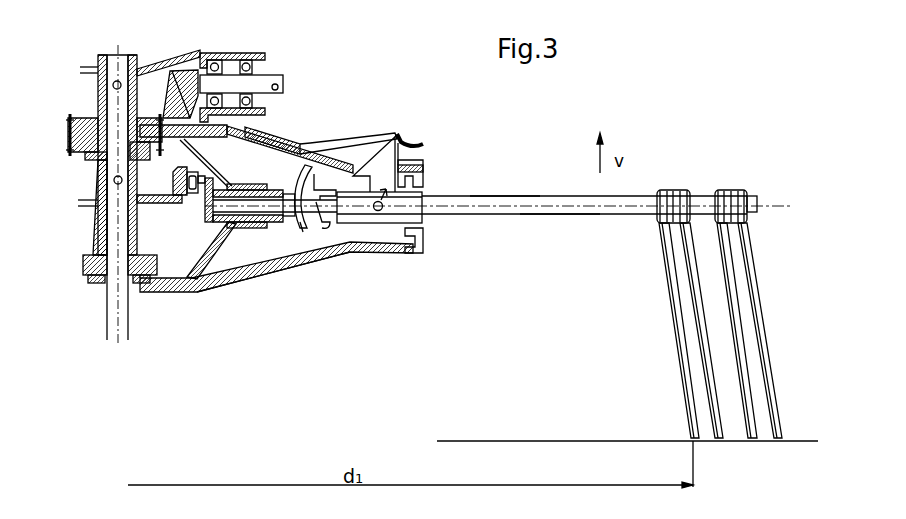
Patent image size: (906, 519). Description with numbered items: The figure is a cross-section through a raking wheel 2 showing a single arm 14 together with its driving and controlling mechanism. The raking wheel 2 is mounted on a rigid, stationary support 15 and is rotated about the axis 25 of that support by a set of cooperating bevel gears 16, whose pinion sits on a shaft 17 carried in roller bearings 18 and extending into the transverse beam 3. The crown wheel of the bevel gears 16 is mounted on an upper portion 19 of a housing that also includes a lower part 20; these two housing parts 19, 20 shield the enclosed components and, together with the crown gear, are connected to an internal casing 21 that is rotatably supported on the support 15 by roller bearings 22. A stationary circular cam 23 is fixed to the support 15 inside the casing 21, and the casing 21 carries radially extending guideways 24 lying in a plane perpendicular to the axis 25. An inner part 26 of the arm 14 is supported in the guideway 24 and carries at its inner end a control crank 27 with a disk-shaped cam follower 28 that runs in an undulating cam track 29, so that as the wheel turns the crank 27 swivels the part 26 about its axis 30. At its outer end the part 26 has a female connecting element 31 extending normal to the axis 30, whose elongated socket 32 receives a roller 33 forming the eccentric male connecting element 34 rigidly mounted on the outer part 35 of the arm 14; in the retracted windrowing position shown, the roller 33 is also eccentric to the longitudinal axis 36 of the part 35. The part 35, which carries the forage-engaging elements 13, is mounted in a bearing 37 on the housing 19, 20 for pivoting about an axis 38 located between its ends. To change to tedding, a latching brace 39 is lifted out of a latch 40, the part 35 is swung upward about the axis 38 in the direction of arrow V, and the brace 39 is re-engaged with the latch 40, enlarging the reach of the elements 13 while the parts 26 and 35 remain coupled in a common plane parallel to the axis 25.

The raking wheel 2 is at (165, 295).
The transverse beam 3 is at (230, 54).
The forage-engaging elements 13 is at (737, 444).
The arm 14 is at (508, 194).
The support 15 is at (103, 113).
The bevel gears 16 is at (166, 96).
The shaft 17 is at (266, 83).
The roller bearings 18 is at (213, 58).
The upper portion of housing 19 is at (242, 123).
The lower part of housing 20 is at (232, 290).
The internal casing 21 is at (210, 258).
The roller bearings 22 is at (93, 163).
The circular cam 23 is at (97, 224).
The guideway 24 is at (247, 187).
The axis 25 is at (118, 52).
The part of arm 26 is at (273, 214).
The control crank 27 is at (207, 203).
The cam follower 28 is at (192, 203).
The cam track 29 is at (175, 181).
The axis 30 is at (242, 224).
The female connecting element 31 is at (300, 225).
The socket 32 is at (297, 190).
The roller 33 is at (336, 150).
The bracket 34 is at (320, 204).
The part of arm 35 is at (503, 209).
The longitudinal axis 36 is at (558, 208).
The bearing 37 is at (368, 220).
The pivoting axis 38 is at (355, 176).
The latching brace 39 is at (413, 143).
The latch 40 is at (392, 160).